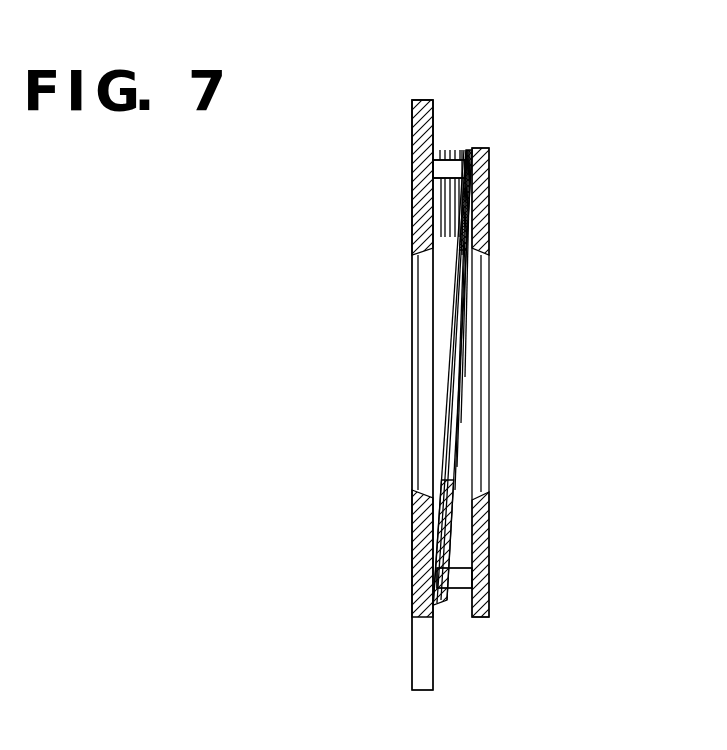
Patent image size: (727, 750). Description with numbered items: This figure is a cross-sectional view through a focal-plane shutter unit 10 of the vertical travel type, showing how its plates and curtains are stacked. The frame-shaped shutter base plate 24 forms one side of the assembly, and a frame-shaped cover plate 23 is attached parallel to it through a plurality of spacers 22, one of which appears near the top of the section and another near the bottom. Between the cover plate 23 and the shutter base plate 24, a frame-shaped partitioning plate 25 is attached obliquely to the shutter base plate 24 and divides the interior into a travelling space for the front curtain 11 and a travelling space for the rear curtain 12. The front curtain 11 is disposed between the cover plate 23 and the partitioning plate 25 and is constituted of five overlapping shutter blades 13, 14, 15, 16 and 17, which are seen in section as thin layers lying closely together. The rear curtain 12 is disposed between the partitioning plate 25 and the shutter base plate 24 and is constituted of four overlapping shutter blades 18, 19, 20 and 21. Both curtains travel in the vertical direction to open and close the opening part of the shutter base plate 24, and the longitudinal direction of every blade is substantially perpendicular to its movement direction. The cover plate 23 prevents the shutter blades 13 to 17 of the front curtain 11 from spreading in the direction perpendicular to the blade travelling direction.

The focal-plane shutter unit 10 is at (534, 77).
The front curtain 11 is at (458, 530).
The rear curtain 12 is at (447, 139).
The shutter blade 13 is at (468, 312).
The shutter blade 14 is at (465, 357).
The shutter blade 15 is at (462, 402).
The shutter blade 16 is at (457, 442).
The shutter blade 17 is at (455, 482).
The shutter blade 18 is at (470, 203).
The shutter blade 19 is at (468, 238).
The shutter blade 20 is at (440, 190).
The shutter blade 21 is at (442, 212).
The spacer 22 is at (455, 167).
The cover plate 23 is at (480, 543).
The shutter base plate 24 is at (417, 453).
The partitioning plate 25 is at (418, 540).